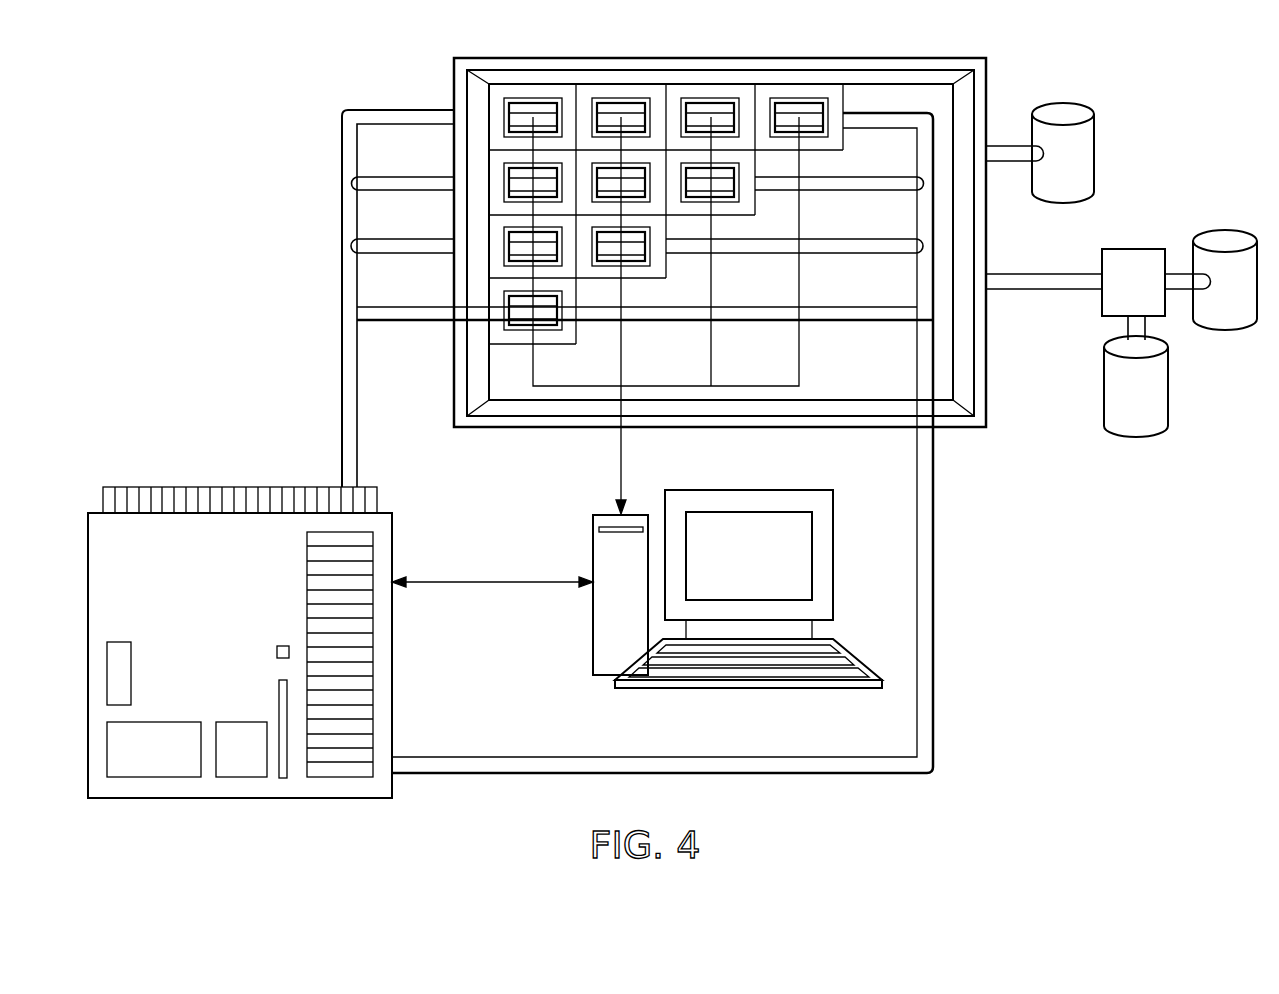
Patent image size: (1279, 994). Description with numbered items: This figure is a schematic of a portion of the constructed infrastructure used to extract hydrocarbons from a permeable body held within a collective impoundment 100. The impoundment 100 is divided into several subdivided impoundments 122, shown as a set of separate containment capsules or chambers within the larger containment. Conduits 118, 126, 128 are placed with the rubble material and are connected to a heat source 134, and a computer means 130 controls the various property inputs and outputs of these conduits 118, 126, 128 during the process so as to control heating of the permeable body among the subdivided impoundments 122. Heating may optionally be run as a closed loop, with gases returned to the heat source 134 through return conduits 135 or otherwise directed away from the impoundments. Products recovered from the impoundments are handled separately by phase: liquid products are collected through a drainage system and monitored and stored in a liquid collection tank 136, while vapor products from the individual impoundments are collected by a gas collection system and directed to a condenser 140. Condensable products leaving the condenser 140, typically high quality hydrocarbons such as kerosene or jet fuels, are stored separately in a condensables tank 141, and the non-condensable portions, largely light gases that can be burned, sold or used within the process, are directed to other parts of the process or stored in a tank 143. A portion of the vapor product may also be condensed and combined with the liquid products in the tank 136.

The impoundment 100 is at (1064, 317).
The conduit 118 is at (347, 147).
The subdivided impoundments 122 is at (832, 95).
The conduit 126 is at (409, 183).
The conduit 128 is at (409, 249).
The computer means 130 is at (748, 690).
The heat source 134 is at (240, 800).
The return conduits 135 is at (935, 630).
The liquid collection tank 136 is at (1049, 170).
The condenser 140 is at (1117, 294).
The condensables tank 141 is at (1121, 403).
The tank 143 is at (1210, 294).